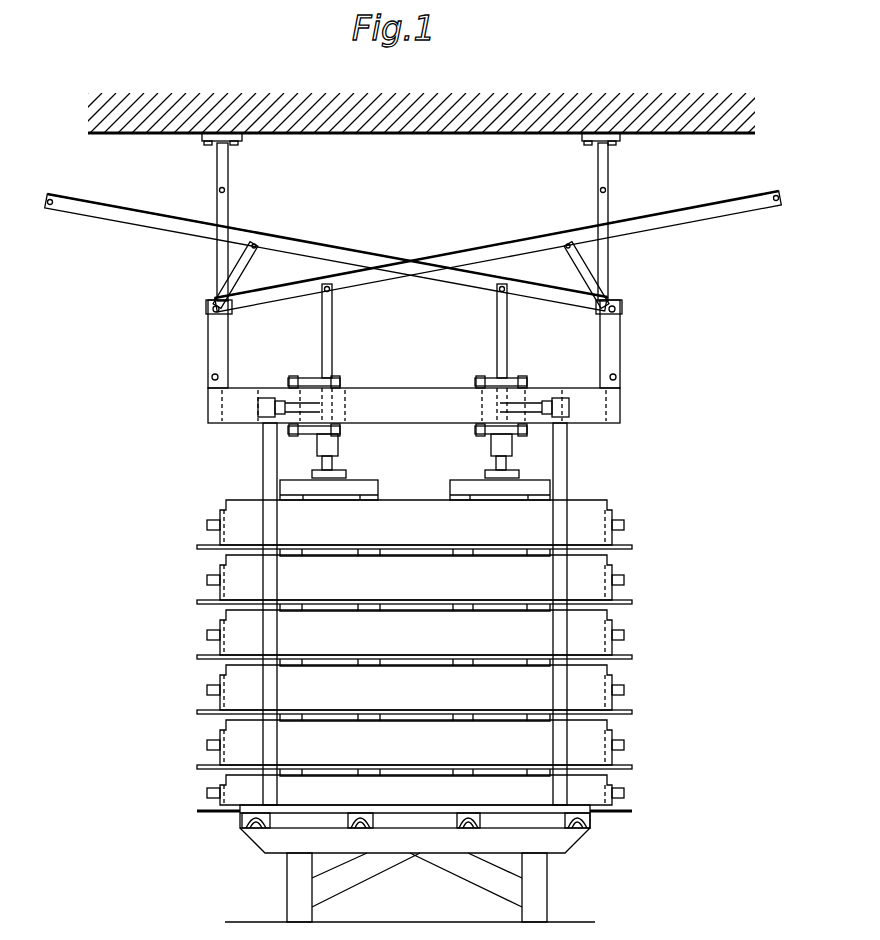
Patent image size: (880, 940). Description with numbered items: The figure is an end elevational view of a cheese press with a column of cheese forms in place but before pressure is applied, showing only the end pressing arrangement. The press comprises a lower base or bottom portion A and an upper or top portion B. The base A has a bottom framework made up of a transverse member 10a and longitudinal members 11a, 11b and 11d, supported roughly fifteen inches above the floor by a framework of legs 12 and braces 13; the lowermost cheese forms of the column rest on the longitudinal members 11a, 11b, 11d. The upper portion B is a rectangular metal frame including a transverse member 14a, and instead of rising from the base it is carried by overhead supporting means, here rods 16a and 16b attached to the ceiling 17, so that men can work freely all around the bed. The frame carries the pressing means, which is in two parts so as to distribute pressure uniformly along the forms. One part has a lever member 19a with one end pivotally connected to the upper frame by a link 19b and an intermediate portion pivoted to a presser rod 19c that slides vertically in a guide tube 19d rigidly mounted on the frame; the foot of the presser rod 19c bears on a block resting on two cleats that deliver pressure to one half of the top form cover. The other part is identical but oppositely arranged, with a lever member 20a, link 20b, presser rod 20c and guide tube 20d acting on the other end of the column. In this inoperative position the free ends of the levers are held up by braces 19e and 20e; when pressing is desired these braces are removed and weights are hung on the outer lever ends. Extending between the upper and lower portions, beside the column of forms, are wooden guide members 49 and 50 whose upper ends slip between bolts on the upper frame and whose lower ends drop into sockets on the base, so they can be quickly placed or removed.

The ceiling 17 is at (396, 134).
The rod 16a is at (229, 170).
The rod 16b is at (597, 172).
The lever member 20a is at (316, 251).
The lever member 19a is at (357, 287).
The brace 20e is at (238, 269).
The brace 19e is at (586, 268).
The link 19b is at (208, 349).
The link 20b is at (620, 348).
The transverse member 14a is at (405, 394).
The presser rod 19c is at (333, 340).
The presser rod 20c is at (507, 336).
The guide tube 19d is at (340, 448).
The guide tube 20d is at (492, 440).
The guide member 49 is at (263, 460).
The guide member 50 is at (568, 466).
The transverse member 10a is at (560, 838).
The longitudinal member 11a is at (240, 821).
The longitudinal member 11b is at (372, 821).
The longitudinal member 11d is at (592, 820).
The leg 12 is at (287, 905).
The brace 13 is at (352, 877).
The lower base or bottom portion A is at (420, 863).
The upper or top portion B is at (408, 381).